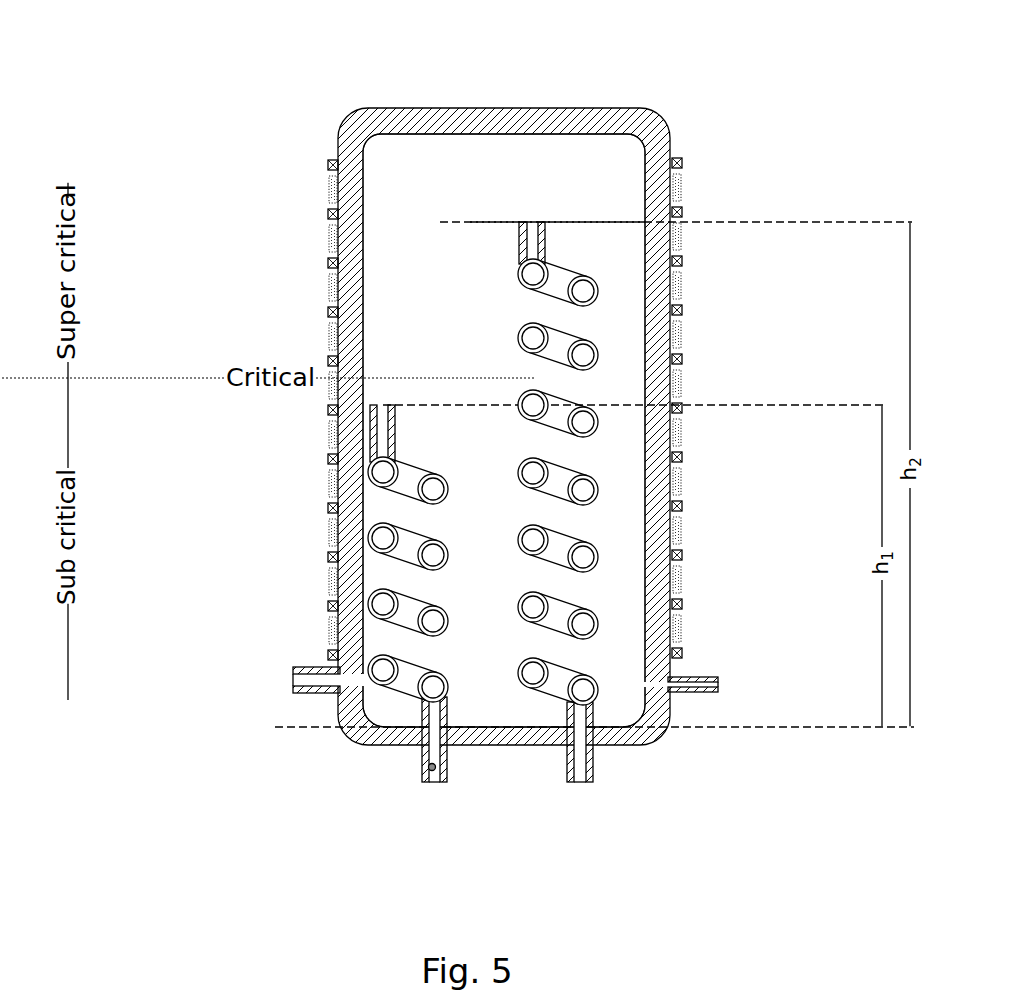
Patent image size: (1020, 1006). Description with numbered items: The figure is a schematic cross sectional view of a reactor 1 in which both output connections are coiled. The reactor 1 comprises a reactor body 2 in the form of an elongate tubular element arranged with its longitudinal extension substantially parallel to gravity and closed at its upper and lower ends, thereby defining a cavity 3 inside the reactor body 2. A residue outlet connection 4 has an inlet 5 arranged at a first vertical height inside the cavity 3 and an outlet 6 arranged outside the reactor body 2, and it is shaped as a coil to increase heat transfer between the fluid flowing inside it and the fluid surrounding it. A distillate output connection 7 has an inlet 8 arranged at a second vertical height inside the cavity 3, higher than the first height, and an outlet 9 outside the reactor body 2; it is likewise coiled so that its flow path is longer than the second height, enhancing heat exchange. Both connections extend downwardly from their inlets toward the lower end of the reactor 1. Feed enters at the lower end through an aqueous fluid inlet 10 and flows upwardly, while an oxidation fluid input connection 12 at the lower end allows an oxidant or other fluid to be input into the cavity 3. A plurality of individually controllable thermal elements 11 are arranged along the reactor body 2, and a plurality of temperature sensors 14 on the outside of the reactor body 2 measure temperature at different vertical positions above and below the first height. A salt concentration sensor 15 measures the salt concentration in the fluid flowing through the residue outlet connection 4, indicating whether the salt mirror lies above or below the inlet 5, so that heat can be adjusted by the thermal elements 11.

The reactor 1 is at (320, 107).
The reactor body 2 is at (520, 122).
The cavity 3 is at (375, 210).
The residue outlet connection 4 is at (388, 494).
The inlet of the residue outlet connection 5 is at (385, 408).
The outlet of the residue outlet connection 6 is at (432, 788).
The distillate output connection 7 is at (455, 278).
The inlet of the distillate output connection 8 is at (470, 232).
The outlet of the distillate output connection 9 is at (593, 793).
The aqueous fluid inlet 10 is at (305, 668).
The thermal elements 11 is at (697, 327).
The oxidation fluid input connection 12 is at (728, 682).
The temperature sensors 14 is at (330, 313).
The salt concentration sensor 15 is at (425, 767).